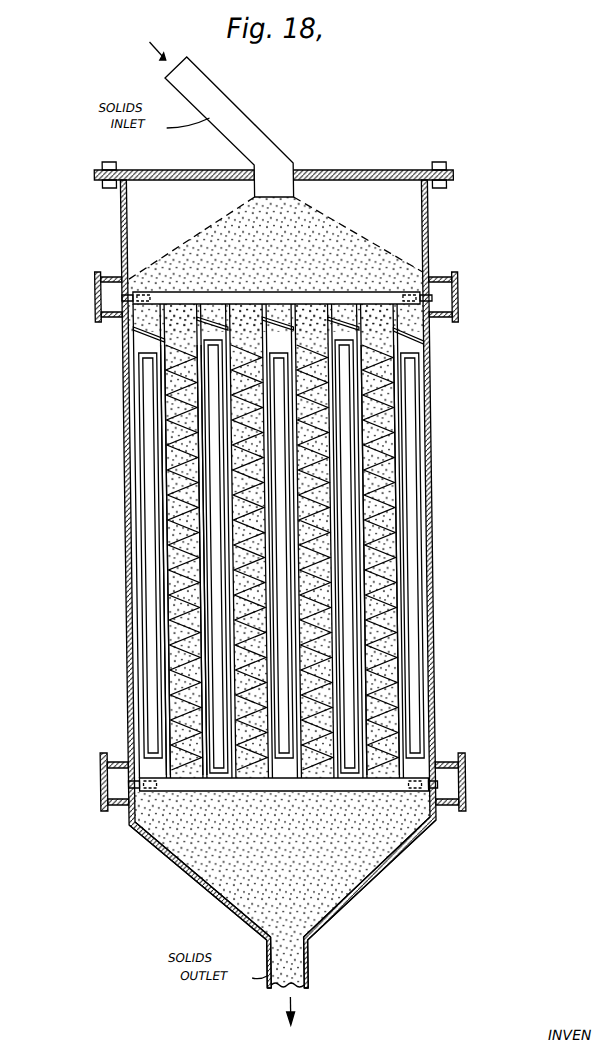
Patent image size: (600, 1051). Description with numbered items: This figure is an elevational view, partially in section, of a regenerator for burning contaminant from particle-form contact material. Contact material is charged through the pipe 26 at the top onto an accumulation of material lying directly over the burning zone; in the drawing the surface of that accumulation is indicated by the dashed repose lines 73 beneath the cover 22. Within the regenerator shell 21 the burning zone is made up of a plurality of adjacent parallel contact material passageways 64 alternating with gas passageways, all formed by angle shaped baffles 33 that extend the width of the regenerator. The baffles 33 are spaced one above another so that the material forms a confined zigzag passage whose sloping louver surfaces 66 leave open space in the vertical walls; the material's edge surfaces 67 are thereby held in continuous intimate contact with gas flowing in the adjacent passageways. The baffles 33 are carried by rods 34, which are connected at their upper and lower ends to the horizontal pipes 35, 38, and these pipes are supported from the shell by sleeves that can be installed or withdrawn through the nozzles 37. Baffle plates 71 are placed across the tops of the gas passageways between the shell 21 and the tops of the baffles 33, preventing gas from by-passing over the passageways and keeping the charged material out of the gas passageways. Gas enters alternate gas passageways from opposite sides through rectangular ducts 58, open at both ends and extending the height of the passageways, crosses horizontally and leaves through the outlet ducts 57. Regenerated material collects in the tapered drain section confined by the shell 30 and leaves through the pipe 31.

The regenerator shell 21 is at (431, 219).
The top cover plate 22 is at (401, 170).
The pipe 26 is at (256, 124).
The shell 30 is at (208, 898).
The pipe 31 is at (300, 961).
The angle shaped baffles 33 is at (206, 586).
The rods 34 is at (204, 590).
The horizontal pipe 35 is at (347, 290).
The nozzles 37 is at (111, 284).
The horizontal pipe 38 is at (408, 774).
The outlet ducts 57 is at (209, 490).
The rectangular ducts 58 is at (145, 462).
The contact material passageways 64 is at (177, 365).
The louver 66 is at (181, 440).
The edge surfaces 67 is at (182, 638).
The baffle plates 71 is at (334, 318).
The solids pile surface 73 is at (192, 240).